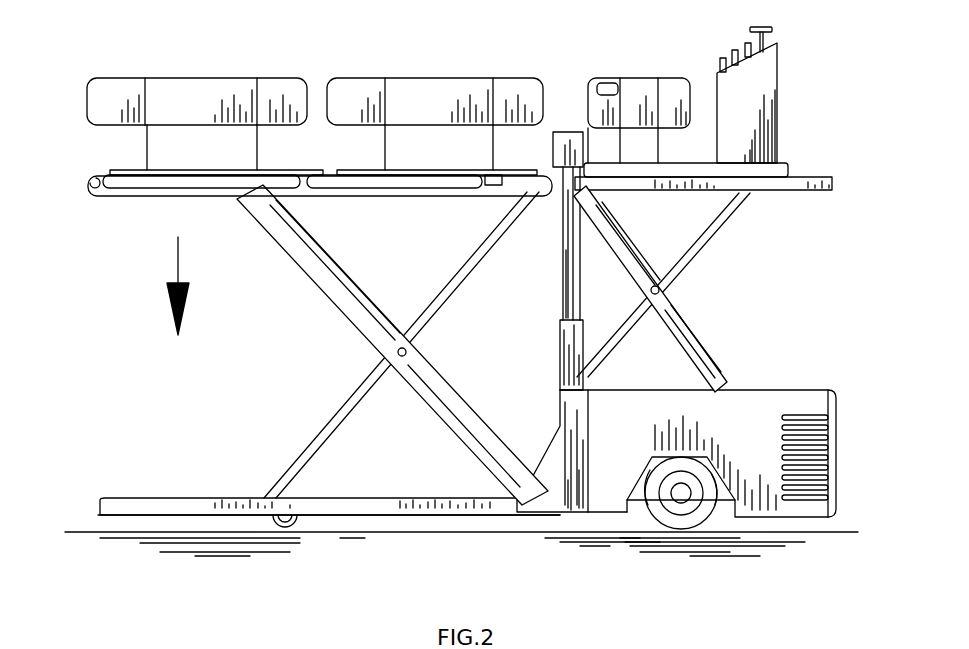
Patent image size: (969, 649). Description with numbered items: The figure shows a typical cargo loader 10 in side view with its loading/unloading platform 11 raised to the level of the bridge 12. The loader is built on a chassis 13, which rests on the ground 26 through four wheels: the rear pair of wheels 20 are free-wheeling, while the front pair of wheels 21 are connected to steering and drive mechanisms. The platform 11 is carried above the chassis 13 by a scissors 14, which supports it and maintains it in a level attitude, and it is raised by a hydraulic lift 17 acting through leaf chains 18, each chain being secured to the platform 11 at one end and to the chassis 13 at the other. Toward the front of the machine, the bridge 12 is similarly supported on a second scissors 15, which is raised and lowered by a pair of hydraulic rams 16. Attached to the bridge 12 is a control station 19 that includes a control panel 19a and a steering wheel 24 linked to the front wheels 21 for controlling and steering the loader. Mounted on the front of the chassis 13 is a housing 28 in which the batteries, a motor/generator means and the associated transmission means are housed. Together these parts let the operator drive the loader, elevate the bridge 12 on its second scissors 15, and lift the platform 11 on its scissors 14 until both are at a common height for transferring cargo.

The cargo loader 10 is at (222, 380).
The loading/unloading platform 11 is at (130, 171).
The bridge 12 is at (803, 177).
The chassis 13 is at (375, 511).
The scissors 14 is at (336, 284).
The second scissors 15 is at (690, 318).
The hydraulic rams 16 is at (679, 336).
The hydraulic lift 17 is at (560, 247).
The leaf chains 18 is at (583, 282).
The control station 19 is at (762, 90).
The control panel 19a is at (734, 51).
The rear wheels 20 is at (298, 528).
The front wheels 21 is at (678, 523).
The steering wheel 24 is at (774, 28).
The ground surface 26 is at (134, 532).
The housing 28 is at (756, 402).